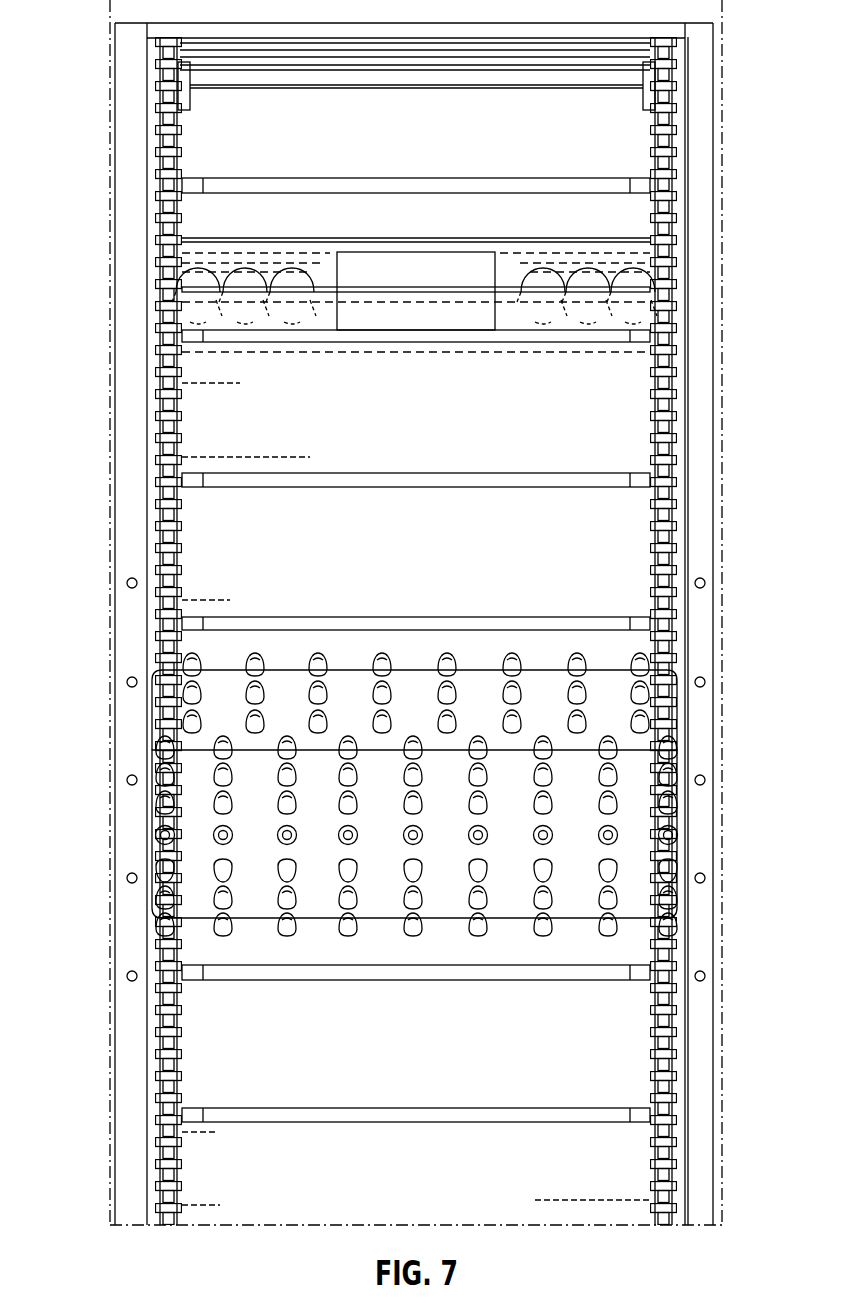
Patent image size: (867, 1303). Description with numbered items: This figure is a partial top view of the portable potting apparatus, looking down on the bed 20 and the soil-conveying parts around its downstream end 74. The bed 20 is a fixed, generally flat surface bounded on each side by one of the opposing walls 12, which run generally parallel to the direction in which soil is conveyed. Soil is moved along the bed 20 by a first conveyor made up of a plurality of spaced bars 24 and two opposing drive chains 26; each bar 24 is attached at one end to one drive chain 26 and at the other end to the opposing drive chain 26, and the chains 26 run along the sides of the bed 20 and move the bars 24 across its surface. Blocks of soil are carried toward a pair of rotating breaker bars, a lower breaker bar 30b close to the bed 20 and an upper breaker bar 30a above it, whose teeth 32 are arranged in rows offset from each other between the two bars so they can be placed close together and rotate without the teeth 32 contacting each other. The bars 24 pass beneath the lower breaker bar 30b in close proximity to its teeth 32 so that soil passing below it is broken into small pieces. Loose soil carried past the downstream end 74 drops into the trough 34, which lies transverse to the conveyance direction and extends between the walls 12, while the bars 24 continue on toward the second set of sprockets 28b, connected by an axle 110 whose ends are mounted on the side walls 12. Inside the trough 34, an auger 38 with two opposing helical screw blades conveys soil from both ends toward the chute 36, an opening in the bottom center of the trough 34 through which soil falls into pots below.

The opposing walls 12 is at (130, 1112).
The bed 20 is at (459, 1179).
The spaced bars 24 is at (355, 70).
The drive chains 26 is at (182, 1150).
The second set of sprockets 28b is at (190, 95).
The upper breaker bar 30a is at (190, 850).
The lower breaker bar 30b is at (168, 693).
The teeth 32 is at (618, 775).
The trough 34 is at (562, 262).
The chute 36 is at (435, 272).
The auger 38 is at (305, 288).
The downstream end 74 is at (515, 290).
The axle 110 is at (515, 88).